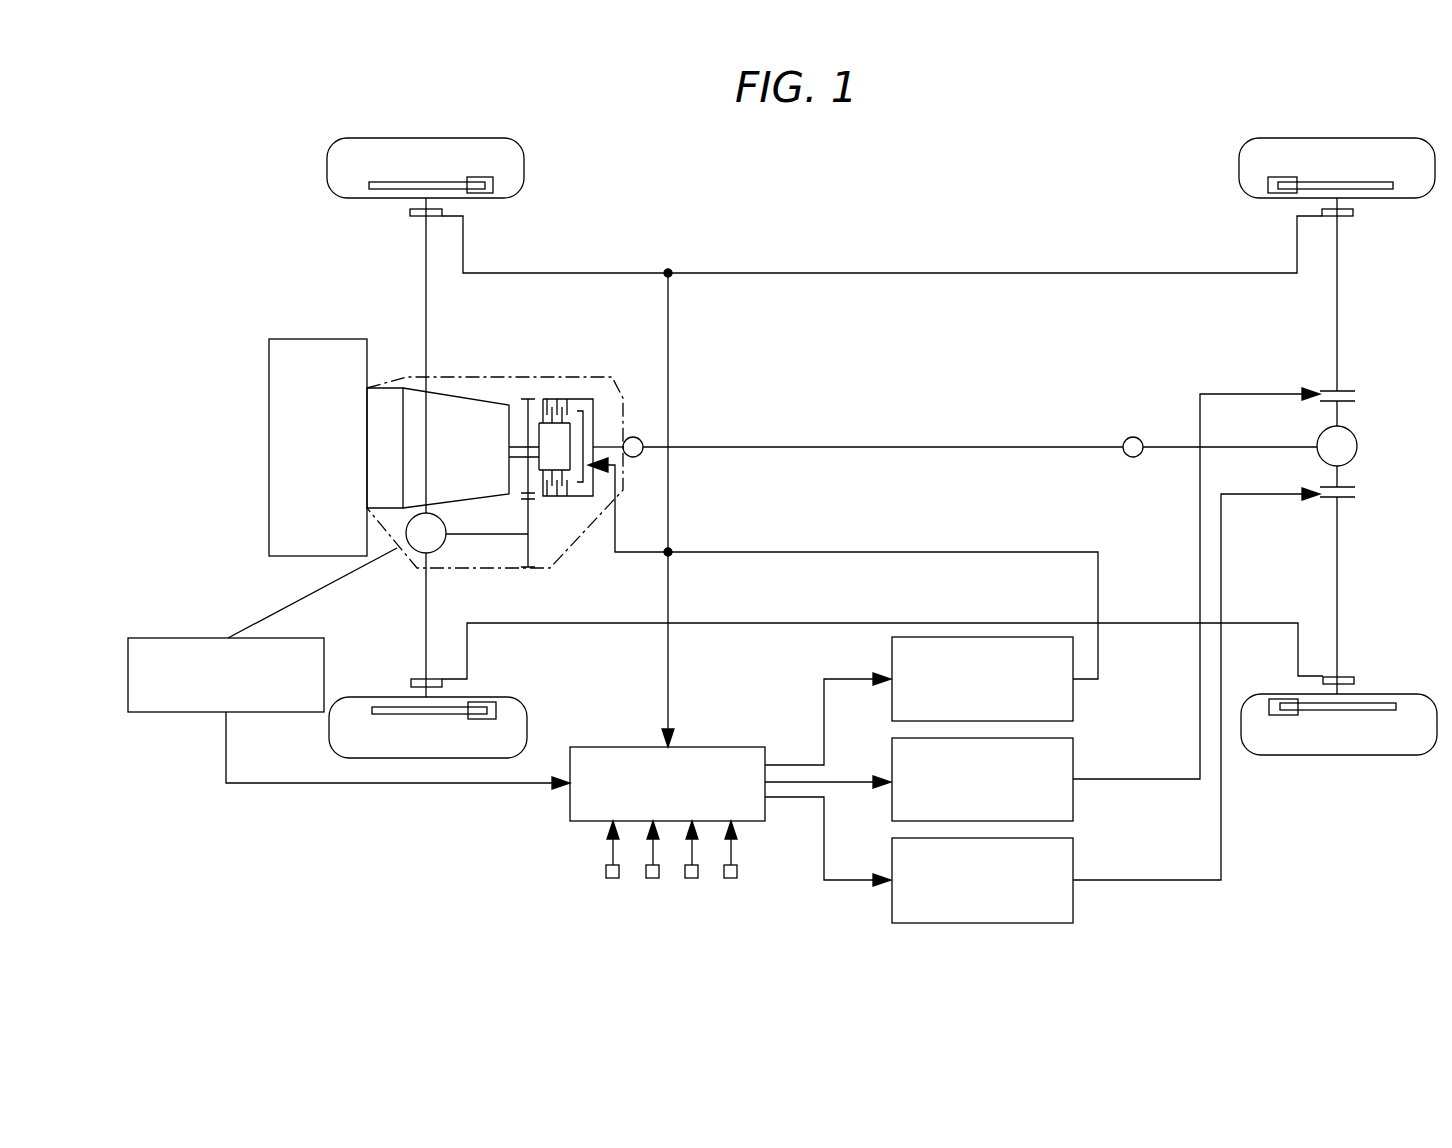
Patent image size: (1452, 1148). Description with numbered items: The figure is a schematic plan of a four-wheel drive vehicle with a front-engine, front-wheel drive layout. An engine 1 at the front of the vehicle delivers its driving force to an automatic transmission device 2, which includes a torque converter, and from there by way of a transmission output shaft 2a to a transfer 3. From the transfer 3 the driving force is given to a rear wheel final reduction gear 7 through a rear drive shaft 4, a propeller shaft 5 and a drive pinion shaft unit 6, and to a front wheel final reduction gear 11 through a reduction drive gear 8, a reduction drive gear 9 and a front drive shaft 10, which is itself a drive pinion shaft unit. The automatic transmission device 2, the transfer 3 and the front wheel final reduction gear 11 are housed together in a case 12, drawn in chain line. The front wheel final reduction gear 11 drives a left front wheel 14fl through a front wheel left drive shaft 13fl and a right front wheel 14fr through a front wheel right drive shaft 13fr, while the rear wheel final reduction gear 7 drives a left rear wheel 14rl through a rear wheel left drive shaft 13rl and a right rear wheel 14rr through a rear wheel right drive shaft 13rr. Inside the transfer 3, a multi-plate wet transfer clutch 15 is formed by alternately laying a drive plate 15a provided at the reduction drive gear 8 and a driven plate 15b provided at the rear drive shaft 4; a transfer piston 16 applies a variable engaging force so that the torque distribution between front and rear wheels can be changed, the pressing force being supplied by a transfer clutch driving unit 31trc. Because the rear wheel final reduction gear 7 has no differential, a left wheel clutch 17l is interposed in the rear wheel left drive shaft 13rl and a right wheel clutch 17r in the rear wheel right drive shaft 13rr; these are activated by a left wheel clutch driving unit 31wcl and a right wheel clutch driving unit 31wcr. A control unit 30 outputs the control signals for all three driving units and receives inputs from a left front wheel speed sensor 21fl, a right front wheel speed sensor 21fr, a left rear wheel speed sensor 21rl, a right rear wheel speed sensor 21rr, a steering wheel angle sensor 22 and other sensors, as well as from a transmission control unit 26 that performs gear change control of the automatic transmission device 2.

The engine 1 is at (282, 338).
The automatic transmission device 2 is at (420, 389).
The transmission output shaft 2a is at (517, 447).
The transfer 3 is at (595, 442).
The rear drive shaft 4 is at (614, 447).
The propeller shaft 5 is at (848, 447).
The drive pinion shaft unit 6 is at (1173, 447).
The rear wheel final reduction gear 7 is at (1358, 443).
The reduction drive gear 8 is at (528, 399).
The reduction drive gear 9 is at (528, 548).
The front drive shaft 10 is at (464, 535).
The front wheel final reduction gear 11 is at (428, 554).
The case 12 is at (453, 377).
The front wheel right drive shaft 13fr is at (426, 296).
The front wheel left drive shaft 13fl is at (426, 612).
The rear wheel right drive shaft 13rr is at (1340, 297).
The rear wheel left drive shaft 13rl is at (1340, 580).
The right front wheel 14fr is at (372, 137).
The left front wheel 14fl is at (488, 697).
The right rear wheel 14rr is at (1385, 137).
The left rear wheel 14rl is at (1397, 756).
The transfer clutch 15 is at (648, 341).
The drive plate 15a is at (572, 402).
The driven plate 15b is at (552, 400).
The transfer piston 16 is at (584, 411).
The right wheel clutch 17r is at (1357, 395).
The left wheel clutch 17l is at (1357, 493).
The right front wheel speed sensor 21fr is at (410, 212).
The left front wheel speed sensor 21fl is at (411, 680).
The right rear wheel speed sensor 21rr is at (1353, 214).
The left rear wheel speed sensor 21rl is at (1354, 678).
The steering wheel angle sensor 22 is at (612, 879).
The transmission control unit 26 is at (152, 637).
The control unit 30 is at (720, 746).
The transfer clutch driving unit 31trc is at (1074, 696).
The right wheel clutch driving unit 31wcr is at (1074, 796).
The left wheel clutch driving unit 31wcl is at (1074, 896).